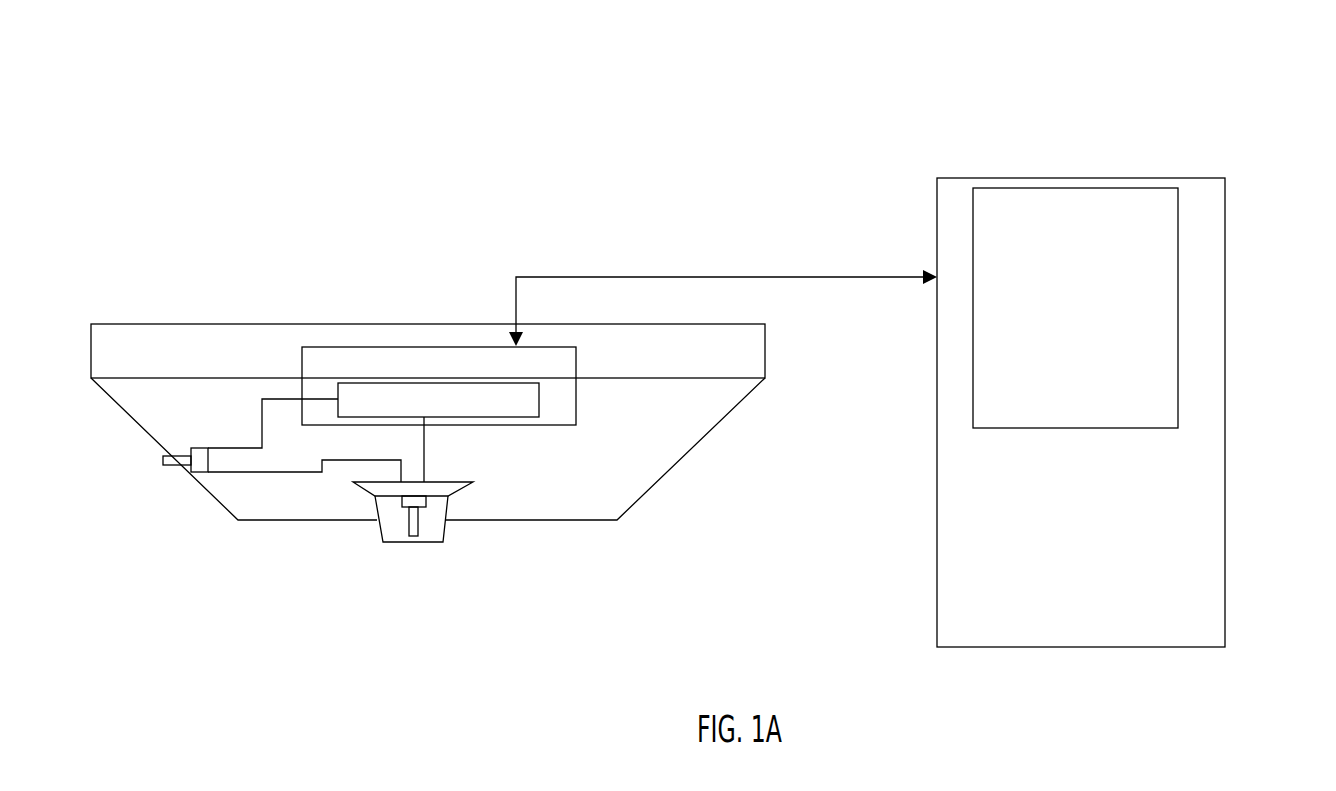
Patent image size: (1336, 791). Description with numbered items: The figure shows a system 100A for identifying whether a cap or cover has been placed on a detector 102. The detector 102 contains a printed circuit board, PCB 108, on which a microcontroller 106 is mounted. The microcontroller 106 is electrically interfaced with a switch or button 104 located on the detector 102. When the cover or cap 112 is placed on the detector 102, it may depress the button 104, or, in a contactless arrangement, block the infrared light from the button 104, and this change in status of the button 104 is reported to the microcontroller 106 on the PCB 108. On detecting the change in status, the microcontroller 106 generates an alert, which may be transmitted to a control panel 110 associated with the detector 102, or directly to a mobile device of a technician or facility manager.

The system 100A is at (348, 134).
The detector 102 is at (305, 324).
The button 104 is at (163, 460).
The microcontroller 106 is at (539, 397).
The PCB 108 is at (576, 405).
The control panel 110 is at (1225, 387).
The cap 112 is at (445, 533).